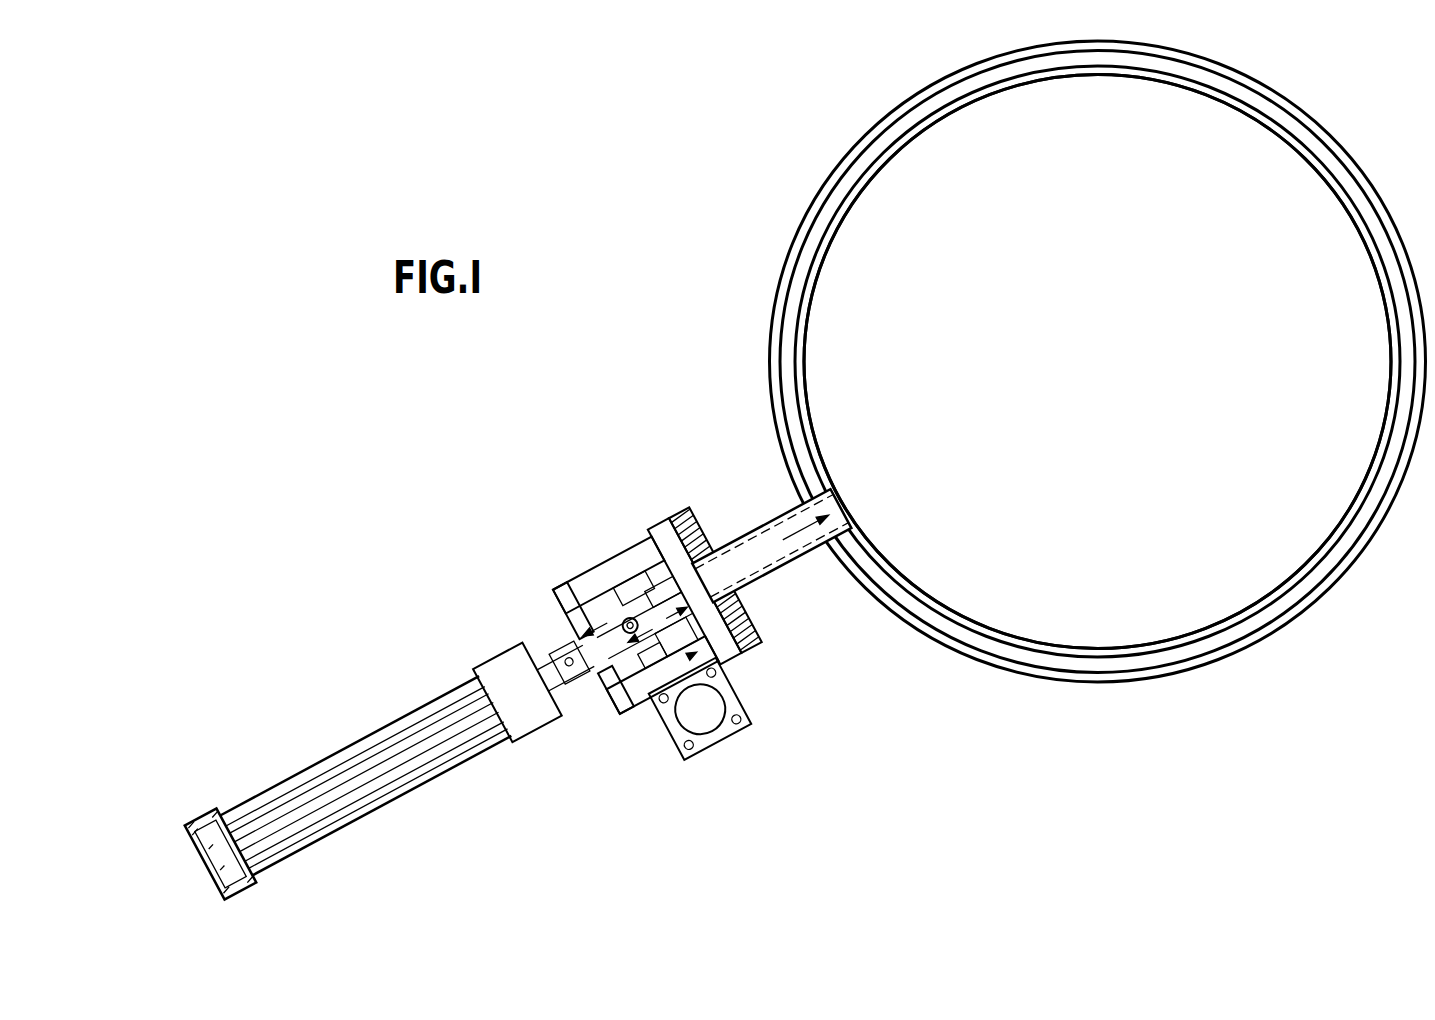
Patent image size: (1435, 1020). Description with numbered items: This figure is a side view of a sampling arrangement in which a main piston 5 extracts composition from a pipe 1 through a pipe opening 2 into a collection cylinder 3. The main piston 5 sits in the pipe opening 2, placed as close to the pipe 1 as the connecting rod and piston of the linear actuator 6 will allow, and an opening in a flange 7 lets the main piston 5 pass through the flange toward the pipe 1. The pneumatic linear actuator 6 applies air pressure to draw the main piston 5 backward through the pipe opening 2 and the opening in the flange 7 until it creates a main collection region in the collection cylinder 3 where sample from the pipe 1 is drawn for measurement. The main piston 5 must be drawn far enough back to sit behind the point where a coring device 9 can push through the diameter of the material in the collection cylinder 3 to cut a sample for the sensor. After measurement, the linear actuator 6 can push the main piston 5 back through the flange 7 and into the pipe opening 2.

The pipe 1 is at (803, 362).
The pipe opening 2 is at (707, 588).
The collection cylinder 3 is at (641, 620).
The main piston 5 is at (588, 642).
The linear actuator 6 is at (341, 763).
The flange 7 is at (737, 626).
The coring device 9 is at (621, 612).